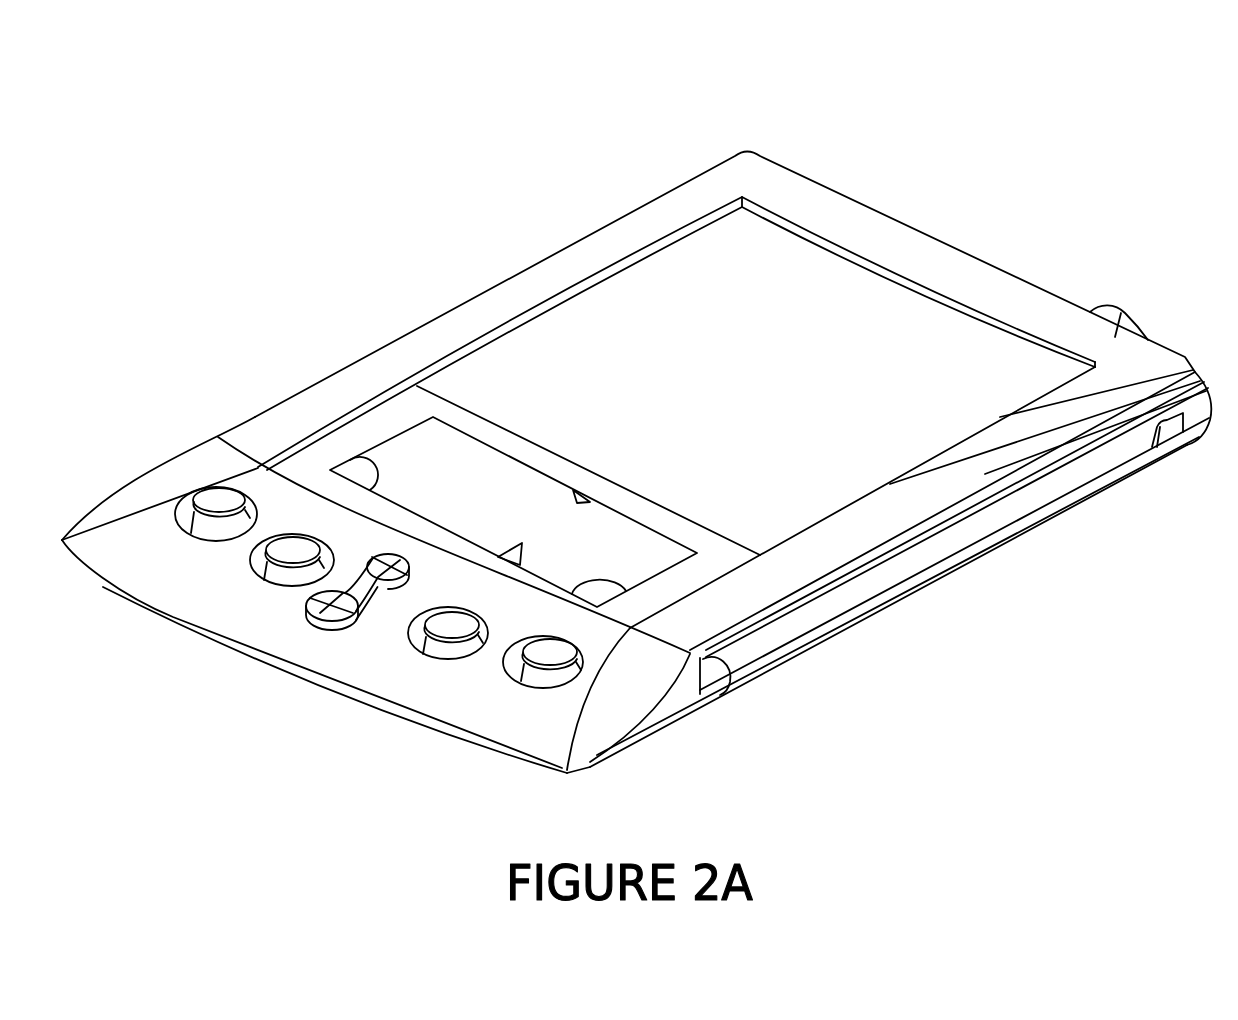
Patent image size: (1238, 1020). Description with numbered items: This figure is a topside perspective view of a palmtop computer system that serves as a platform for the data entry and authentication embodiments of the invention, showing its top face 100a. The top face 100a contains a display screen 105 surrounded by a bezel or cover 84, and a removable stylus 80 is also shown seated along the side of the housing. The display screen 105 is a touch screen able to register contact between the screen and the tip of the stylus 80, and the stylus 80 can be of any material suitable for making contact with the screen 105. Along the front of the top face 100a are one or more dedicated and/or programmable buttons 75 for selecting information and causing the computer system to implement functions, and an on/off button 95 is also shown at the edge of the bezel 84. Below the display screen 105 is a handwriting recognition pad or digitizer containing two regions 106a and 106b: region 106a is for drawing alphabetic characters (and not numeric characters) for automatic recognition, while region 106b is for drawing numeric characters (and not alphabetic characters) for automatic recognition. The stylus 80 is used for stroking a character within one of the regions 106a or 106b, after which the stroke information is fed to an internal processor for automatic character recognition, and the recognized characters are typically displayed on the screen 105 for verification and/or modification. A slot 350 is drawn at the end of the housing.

The handheld computing device 100a is at (95, 96).
The bezel 84 is at (417, 367).
The display screen 105 is at (766, 291).
The handwriting recognition area (left) 106a is at (471, 495).
The handwriting recognition area (right) 106b is at (624, 568).
The buttons 75 is at (207, 497).
The stylus holder notch 95 is at (1113, 308).
The housing side 80 is at (883, 578).
The connector slot 350 is at (1150, 460).